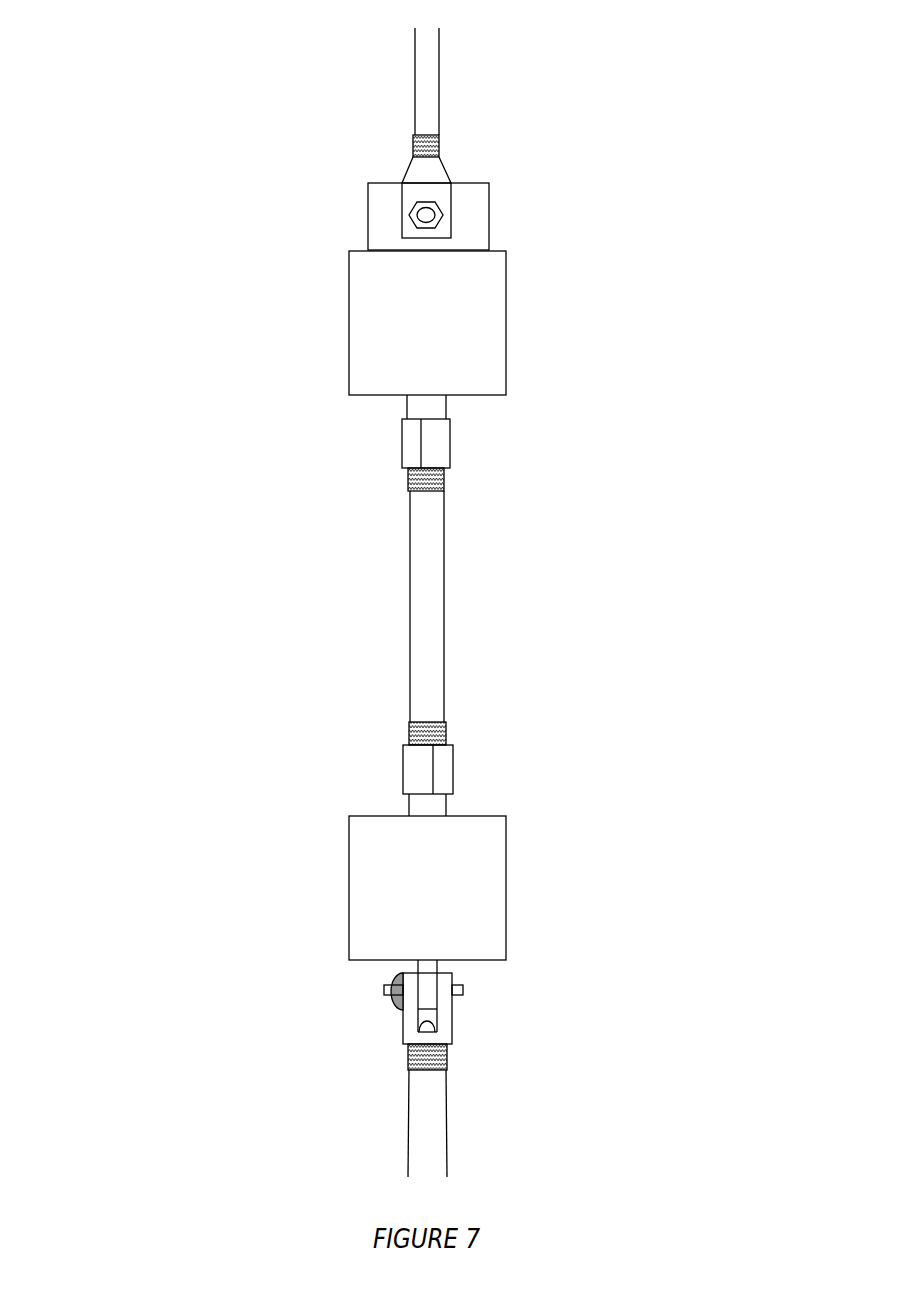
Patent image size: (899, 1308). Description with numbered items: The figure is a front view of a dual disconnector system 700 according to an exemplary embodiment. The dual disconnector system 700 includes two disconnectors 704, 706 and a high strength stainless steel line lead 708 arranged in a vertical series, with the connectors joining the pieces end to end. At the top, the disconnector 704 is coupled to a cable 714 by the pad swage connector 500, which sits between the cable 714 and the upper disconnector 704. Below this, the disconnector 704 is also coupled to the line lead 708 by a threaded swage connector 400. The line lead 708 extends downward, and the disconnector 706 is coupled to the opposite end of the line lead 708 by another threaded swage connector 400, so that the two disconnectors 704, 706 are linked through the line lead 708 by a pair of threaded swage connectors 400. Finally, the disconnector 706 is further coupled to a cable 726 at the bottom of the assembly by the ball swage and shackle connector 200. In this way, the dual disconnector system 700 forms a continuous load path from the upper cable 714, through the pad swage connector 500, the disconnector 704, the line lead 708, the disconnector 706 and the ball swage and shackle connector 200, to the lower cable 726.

The dual disconnector system 700 is at (78, 86).
The cable 714 is at (432, 82).
The pad swage connector 500 is at (455, 168).
The disconnector 704 is at (446, 338).
The threaded swage connector 400 is at (464, 443).
The line lead 708 is at (432, 587).
The disconnector 706 is at (446, 903).
The ball swage and shackle connector 200 is at (465, 1020).
The cable 726 is at (432, 1117).